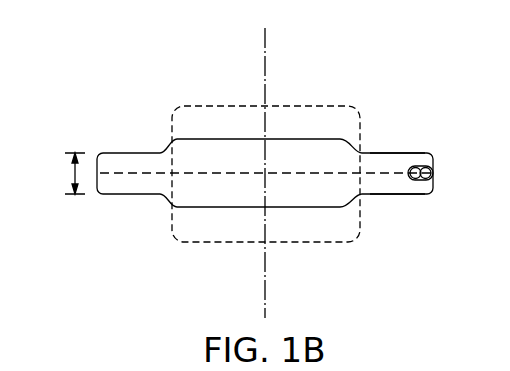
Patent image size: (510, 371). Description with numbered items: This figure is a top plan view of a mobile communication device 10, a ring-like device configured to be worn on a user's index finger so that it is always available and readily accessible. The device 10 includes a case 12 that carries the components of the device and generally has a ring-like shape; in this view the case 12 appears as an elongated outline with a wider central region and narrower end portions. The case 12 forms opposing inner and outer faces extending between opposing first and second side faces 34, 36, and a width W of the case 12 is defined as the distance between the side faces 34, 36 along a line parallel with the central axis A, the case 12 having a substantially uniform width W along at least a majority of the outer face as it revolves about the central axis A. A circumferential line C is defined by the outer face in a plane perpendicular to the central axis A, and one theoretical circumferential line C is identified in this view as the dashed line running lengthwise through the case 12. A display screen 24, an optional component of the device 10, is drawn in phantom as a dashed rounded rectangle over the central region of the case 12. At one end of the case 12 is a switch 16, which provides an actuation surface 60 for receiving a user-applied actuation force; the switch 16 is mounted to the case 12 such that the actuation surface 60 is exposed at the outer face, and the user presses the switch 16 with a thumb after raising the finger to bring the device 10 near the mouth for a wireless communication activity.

The mobile communication device 10 is at (298, 146).
The case 12 is at (137, 152).
The switch 16 is at (433, 166).
The display screen 24 is at (290, 104).
The first side face 34 is at (387, 195).
The second side face 36 is at (407, 152).
The actuation surface 60 is at (434, 175).
The circumferential line C is at (126, 175).
The central axis A is at (265, 277).
The width W is at (73, 173).